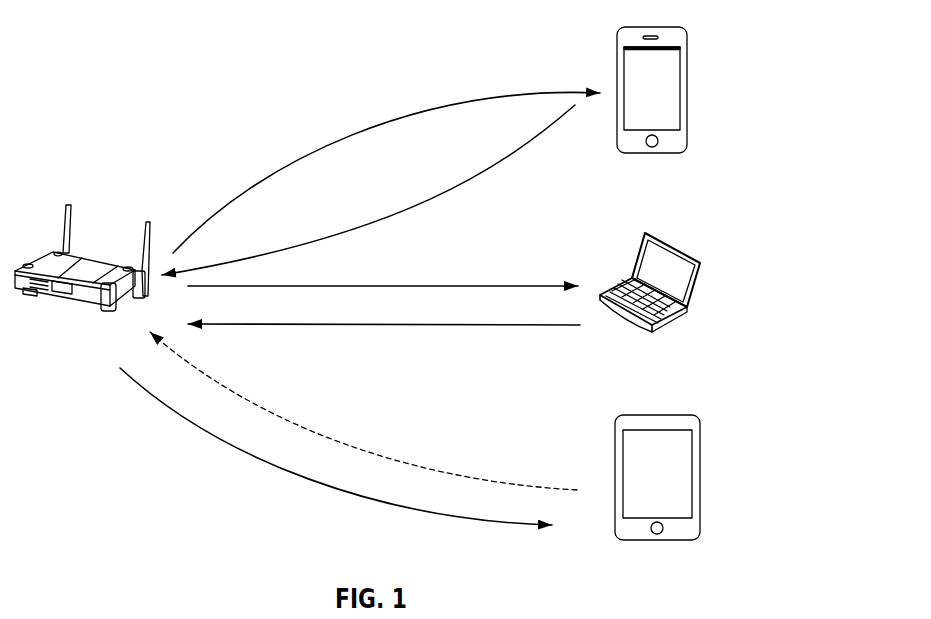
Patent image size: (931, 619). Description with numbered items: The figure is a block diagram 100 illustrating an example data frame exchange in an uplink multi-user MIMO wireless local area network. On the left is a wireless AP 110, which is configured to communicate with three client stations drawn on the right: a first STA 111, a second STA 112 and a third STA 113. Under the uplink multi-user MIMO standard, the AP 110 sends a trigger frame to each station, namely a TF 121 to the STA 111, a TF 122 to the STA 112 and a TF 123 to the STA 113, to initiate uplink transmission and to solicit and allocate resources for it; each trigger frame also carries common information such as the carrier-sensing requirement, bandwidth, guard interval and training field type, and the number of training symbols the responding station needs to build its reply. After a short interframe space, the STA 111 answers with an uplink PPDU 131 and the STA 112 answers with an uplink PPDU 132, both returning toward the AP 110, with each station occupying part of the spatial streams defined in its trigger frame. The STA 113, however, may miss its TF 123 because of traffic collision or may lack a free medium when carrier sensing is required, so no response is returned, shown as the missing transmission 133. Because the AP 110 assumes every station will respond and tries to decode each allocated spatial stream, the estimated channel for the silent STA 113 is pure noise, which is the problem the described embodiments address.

The block diagram 100 is at (130, 50).
The wireless AP 110 is at (68, 343).
The client STA 111 is at (727, 108).
The client STA 112 is at (727, 311).
The client STA 113 is at (733, 498).
The TF 121 is at (447, 99).
The TF 122 is at (402, 285).
The TF 123 is at (390, 500).
The PPDU 131 is at (448, 195).
The PPDU 132 is at (505, 325).
The missing response 133 is at (463, 475).